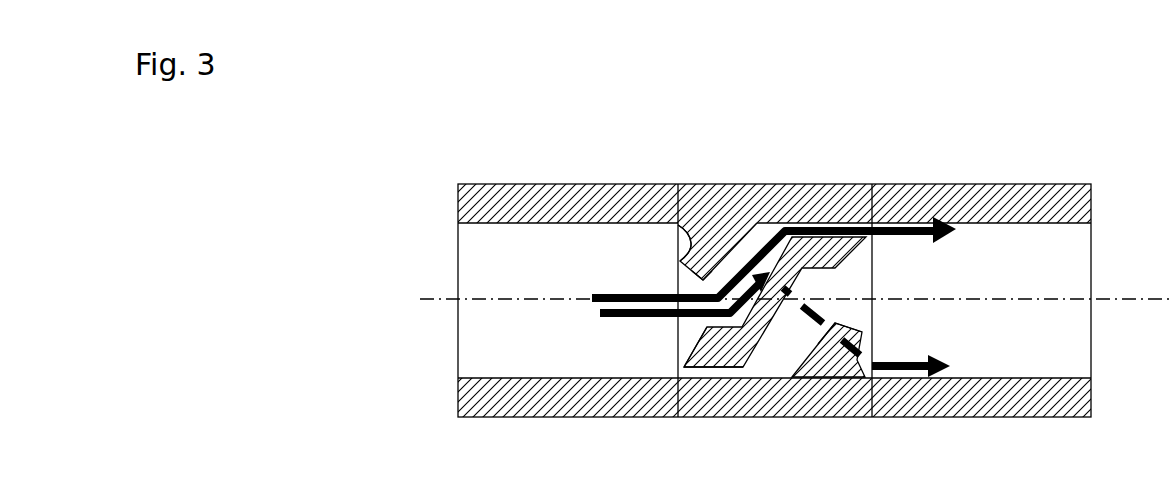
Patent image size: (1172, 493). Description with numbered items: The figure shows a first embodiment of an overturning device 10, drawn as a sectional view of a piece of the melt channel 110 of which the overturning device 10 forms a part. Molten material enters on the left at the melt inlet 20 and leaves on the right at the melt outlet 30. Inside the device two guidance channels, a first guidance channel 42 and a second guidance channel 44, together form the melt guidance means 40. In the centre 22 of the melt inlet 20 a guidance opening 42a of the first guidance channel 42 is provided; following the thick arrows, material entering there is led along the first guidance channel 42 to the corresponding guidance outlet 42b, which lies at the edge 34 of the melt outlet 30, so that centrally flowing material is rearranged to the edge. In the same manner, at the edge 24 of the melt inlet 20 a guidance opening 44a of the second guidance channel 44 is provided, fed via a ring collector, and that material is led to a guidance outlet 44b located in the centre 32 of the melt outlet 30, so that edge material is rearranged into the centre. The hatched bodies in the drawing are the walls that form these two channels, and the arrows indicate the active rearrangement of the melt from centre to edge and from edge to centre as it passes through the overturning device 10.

The melt channel 110 is at (478, 187).
The overturning device 10 is at (748, 136).
The melt inlet 20 is at (612, 261).
The centre of the melt inlet 22 is at (682, 287).
The edge of the melt inlet 24 is at (680, 370).
The melt outlet 30 is at (948, 266).
The centre of the melt outlet 32 is at (860, 287).
The edge of the melt outlet 34 is at (887, 238).
The melt guidance means 40 is at (783, 374).
The first guidance channel 42 is at (752, 241).
The guidance opening of the first guidance channel 42a is at (706, 270).
The guidance outlet of the first guidance channel 42b is at (866, 213).
The second guidance channel 44 is at (793, 343).
The guidance opening of the second guidance channel 44a is at (701, 388).
The guidance outlet of the second guidance channel 44b is at (838, 334).